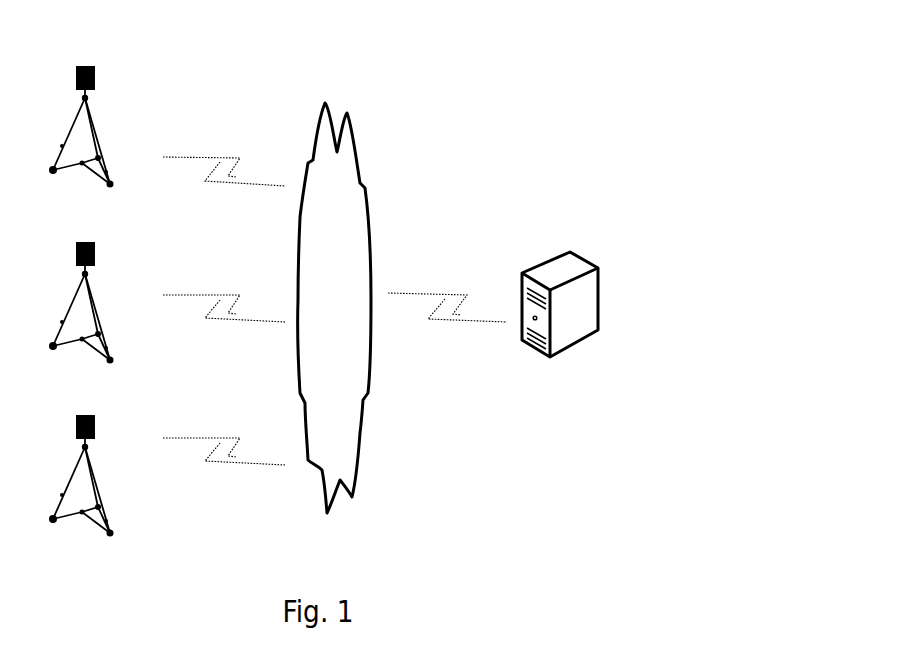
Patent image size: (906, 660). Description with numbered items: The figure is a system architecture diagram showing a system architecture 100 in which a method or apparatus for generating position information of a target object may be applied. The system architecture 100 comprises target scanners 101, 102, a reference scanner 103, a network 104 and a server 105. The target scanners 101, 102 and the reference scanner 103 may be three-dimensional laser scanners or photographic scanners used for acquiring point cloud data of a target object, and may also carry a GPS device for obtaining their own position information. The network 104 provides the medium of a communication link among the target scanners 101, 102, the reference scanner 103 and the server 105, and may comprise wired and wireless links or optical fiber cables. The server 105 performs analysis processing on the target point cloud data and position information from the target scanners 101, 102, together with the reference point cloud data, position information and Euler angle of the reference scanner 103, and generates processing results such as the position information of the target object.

The system architecture 100 is at (570, 52).
The target scanner 101 is at (81, 145).
The target scanner 102 is at (81, 322).
The reference scanner 103 is at (81, 495).
The network 104 is at (334, 308).
The server 105 is at (560, 319).